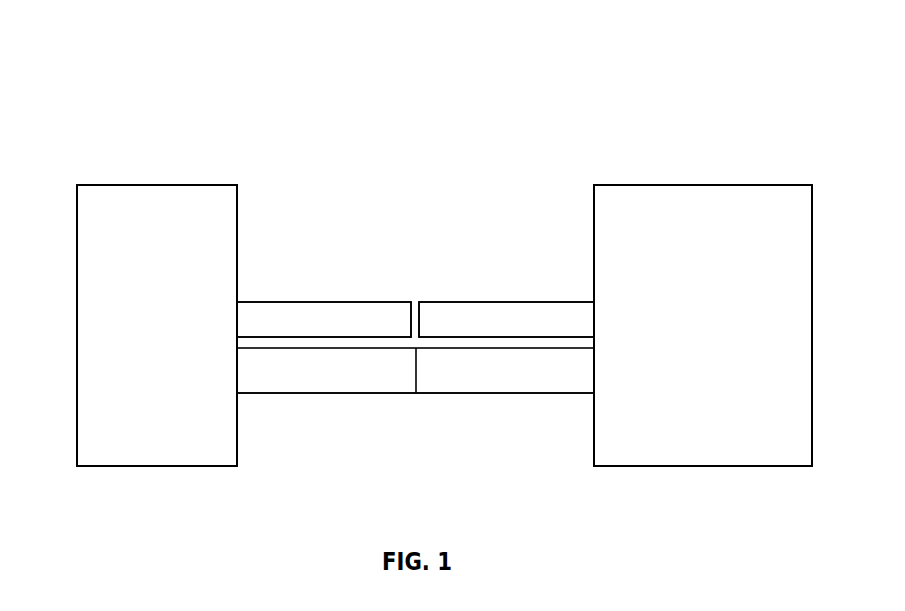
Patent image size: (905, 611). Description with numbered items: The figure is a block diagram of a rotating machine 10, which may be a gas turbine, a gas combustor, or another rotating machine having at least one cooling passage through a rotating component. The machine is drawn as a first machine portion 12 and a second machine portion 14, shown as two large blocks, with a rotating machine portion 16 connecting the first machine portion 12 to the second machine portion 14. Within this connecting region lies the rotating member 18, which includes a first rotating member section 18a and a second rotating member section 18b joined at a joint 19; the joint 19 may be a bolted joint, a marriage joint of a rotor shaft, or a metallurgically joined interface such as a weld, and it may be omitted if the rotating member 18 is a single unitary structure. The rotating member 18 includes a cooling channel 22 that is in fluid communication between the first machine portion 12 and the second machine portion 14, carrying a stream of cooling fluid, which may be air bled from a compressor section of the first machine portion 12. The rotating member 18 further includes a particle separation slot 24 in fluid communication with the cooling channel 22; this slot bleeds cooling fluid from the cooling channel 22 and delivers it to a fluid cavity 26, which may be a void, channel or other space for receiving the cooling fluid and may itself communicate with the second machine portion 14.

The rotating machine 10 is at (126, 108).
The first machine portion 12 is at (157, 325).
The second machine portion 14 is at (703, 325).
The rotating machine portion 16 is at (347, 393).
The rotating member 18 is at (492, 393).
The first rotating member section 18a is at (562, 393).
The second rotating member section 18b is at (282, 393).
The joint 19 is at (416, 378).
The cooling channel 22 is at (297, 336).
The particle separation slot 24 is at (421, 312).
The fluid cavity 26 is at (415, 289).